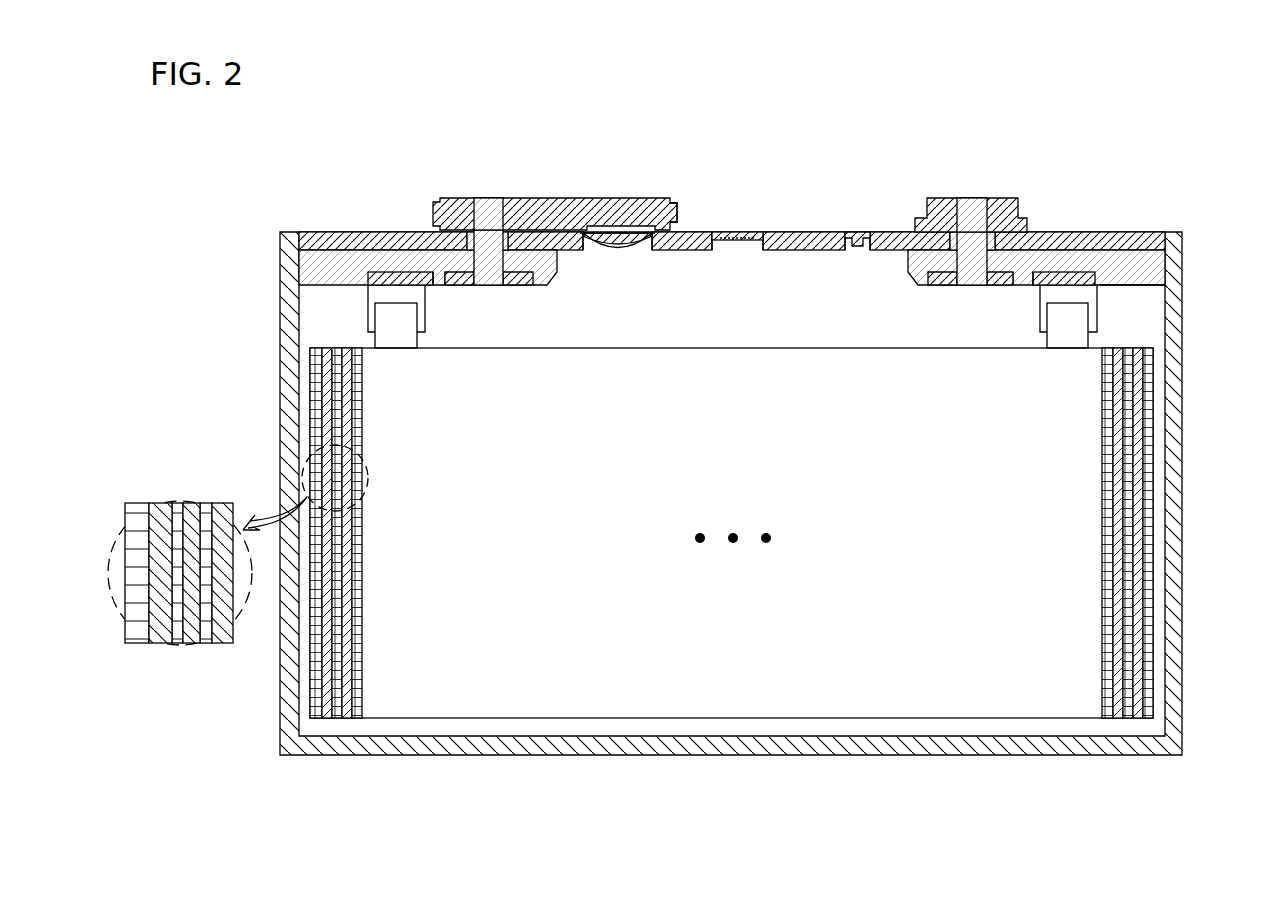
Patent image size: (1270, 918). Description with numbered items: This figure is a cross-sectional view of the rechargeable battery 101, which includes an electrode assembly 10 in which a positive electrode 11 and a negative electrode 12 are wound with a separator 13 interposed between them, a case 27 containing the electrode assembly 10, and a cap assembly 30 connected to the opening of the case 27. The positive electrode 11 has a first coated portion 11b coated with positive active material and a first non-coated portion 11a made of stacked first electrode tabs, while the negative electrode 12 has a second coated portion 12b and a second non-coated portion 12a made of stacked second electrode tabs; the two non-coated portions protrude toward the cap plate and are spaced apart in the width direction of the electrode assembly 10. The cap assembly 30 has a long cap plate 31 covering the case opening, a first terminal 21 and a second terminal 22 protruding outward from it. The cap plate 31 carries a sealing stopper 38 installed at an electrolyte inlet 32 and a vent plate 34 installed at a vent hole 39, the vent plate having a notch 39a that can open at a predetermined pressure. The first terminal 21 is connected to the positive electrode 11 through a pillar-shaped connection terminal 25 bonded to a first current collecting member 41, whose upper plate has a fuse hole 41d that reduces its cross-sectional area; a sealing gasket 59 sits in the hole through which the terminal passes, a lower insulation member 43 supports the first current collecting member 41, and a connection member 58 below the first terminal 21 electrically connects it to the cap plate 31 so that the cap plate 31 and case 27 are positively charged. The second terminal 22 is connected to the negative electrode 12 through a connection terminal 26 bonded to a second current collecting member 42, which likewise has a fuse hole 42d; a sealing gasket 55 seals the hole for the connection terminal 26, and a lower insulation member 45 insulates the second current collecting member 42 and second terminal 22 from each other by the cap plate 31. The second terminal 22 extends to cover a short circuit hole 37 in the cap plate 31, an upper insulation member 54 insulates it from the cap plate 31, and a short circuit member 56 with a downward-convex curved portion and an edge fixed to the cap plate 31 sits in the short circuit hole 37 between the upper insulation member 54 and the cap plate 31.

The rechargeable battery 101 is at (803, 108).
The electrode assembly 10 is at (786, 557).
The positive electrode 11 is at (145, 640).
The negative electrode 12 is at (172, 640).
The separator 13 is at (152, 510).
The first non-coated portion 11a is at (1082, 315).
The first coated portion 11b is at (1152, 348).
The second non-coated portion 12a is at (383, 318).
The second coated portion 12b is at (1133, 347).
The first terminal 21 is at (1000, 210).
The second terminal 22 is at (452, 212).
The connection terminal 25 is at (972, 212).
The connection terminal 26 is at (488, 212).
The case 27 is at (1182, 478).
The cap assembly 30 is at (740, 194).
The cap plate 31 is at (1150, 243).
The electrolyte inlet 32 is at (858, 250).
The vent plate 34 is at (737, 250).
The short circuit hole 37 is at (590, 238).
The sealing stopper 38 is at (858, 236).
The vent hole 39 is at (760, 236).
The notch 39a is at (737, 235).
The first current collecting member 41 is at (1085, 278).
The fuse hole 41d is at (1033, 280).
The second current collecting member 42 is at (380, 278).
The fuse hole 42d is at (435, 280).
The lower insulation member 43 is at (1152, 265).
The lower insulation member 45 is at (312, 265).
The upper insulation member 54 is at (679, 212).
The sealing gasket 55 is at (465, 256).
The short circuit member 56 is at (622, 243).
The connection member 58 is at (1027, 226).
The sealing gasket 59 is at (950, 255).